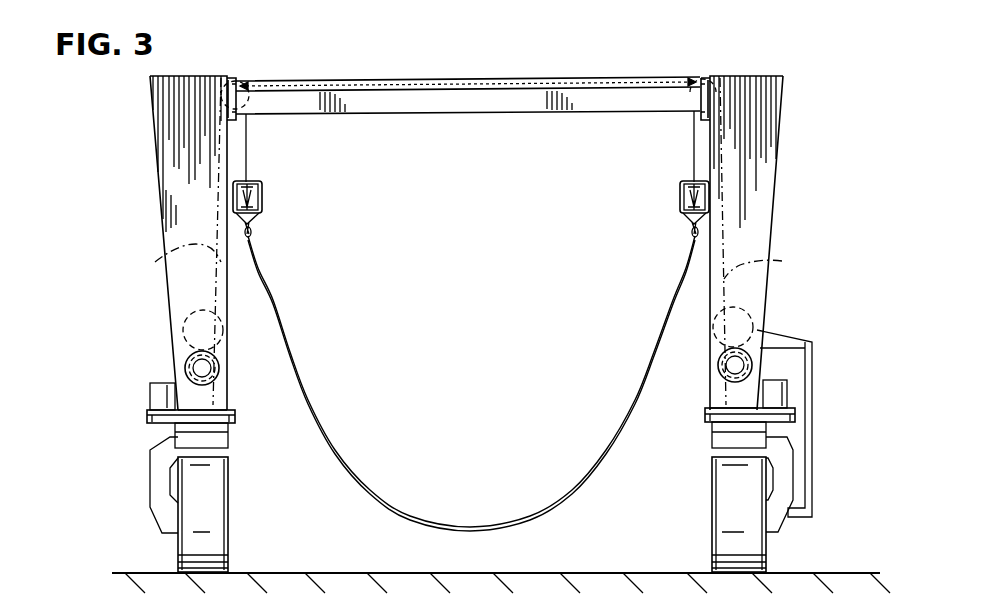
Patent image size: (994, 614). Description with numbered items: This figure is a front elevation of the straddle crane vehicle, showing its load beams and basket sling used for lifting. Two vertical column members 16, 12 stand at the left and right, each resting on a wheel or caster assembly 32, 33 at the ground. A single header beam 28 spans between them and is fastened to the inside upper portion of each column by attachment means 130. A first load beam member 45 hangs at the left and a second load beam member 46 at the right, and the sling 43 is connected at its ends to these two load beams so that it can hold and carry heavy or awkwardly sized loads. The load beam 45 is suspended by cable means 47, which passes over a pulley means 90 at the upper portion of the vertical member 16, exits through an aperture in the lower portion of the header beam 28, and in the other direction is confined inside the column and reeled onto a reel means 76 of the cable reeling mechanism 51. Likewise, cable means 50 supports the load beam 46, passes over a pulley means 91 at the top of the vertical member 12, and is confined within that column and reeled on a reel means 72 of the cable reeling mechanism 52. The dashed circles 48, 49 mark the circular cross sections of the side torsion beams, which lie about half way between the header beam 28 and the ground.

The vertical column member 12 is at (762, 160).
The vertical column member 16 is at (180, 192).
The header beam 28 is at (464, 104).
The wheel or caster assembly 32 is at (237, 526).
The wheel or caster assembly 33 is at (712, 515).
The sling 43 is at (382, 490).
The first load beam member 45 is at (257, 220).
The second load beam member 46 is at (682, 224).
The cable means 47 is at (246, 147).
The cable means / side beam cross section 48 is at (751, 310).
The cable means / side beam cross section 49 is at (186, 313).
The cable means 50 is at (694, 148).
The cable reeling mechanism 51 is at (180, 359).
The cable reeling mechanism 52 is at (710, 361).
The reel means 72 is at (735, 370).
The reel means 76 is at (212, 388).
The pulley means 90 is at (238, 92).
The pulley means 91 is at (698, 88).
The attachment means 130 is at (230, 74).